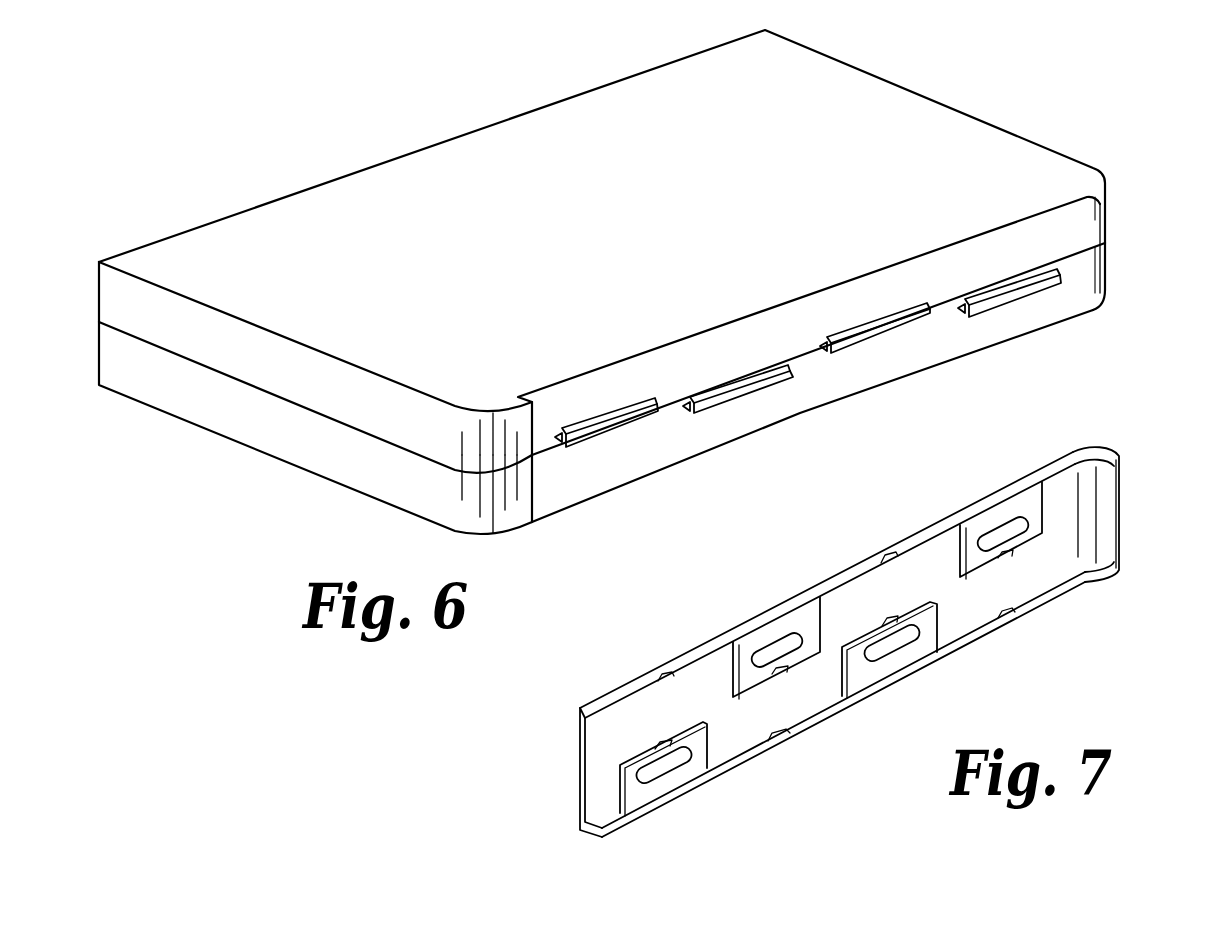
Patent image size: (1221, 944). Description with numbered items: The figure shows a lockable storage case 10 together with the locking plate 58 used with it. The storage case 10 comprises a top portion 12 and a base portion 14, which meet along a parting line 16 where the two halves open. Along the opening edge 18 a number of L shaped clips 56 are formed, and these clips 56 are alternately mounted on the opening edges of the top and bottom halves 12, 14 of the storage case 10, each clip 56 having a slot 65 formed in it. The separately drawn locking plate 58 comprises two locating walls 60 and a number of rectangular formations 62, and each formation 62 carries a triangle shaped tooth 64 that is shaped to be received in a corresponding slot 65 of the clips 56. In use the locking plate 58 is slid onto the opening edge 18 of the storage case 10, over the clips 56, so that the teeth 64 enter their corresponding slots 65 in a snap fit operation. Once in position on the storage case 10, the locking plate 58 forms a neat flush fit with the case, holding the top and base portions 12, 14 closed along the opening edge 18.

In FIG. 6, the storage case 10 is at (922, 84).
In FIG. 6, the top portion 12 is at (1038, 162).
In FIG. 6, the base portion 14 is at (367, 473).
In FIG. 6, the parting line 16 is at (99, 322).
In FIG. 6, the opening edge 18 is at (1085, 235).
In FIG. 6, the L shaped clips 56 is at (1028, 290).
In FIG. 7, the locking plate 58 is at (812, 733).
In FIG. 7, the locating walls 60 is at (1035, 469).
In FIG. 7, the rectangular formations 62 is at (1040, 523).
In FIG. 7, the triangle shaped tooth 64 is at (667, 737).
In FIG. 6, the slots 65 is at (738, 378).